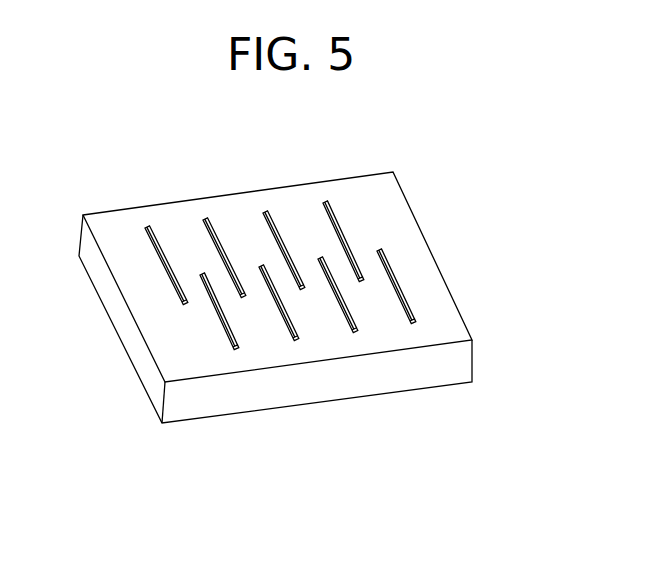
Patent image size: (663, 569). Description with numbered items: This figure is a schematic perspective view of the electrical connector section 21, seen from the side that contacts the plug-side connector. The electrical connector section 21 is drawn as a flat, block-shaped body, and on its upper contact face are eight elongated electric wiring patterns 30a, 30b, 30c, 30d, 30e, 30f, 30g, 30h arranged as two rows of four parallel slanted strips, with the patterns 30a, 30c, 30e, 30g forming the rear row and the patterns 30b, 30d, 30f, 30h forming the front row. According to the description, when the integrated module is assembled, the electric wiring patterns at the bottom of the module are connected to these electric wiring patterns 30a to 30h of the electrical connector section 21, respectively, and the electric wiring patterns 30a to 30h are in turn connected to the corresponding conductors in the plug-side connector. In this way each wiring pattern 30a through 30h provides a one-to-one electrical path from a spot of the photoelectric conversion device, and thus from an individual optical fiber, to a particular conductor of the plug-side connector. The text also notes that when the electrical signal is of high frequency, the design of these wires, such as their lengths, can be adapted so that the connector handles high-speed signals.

The electrical connector section 21 is at (176, 435).
The electric wiring pattern 30a is at (152, 232).
The electric wiring pattern 30b is at (237, 344).
The electric wiring pattern 30c is at (208, 222).
The electric wiring pattern 30d is at (297, 336).
The electric wiring pattern 30e is at (266, 215).
The electric wiring pattern 30f is at (356, 328).
The electric wiring pattern 30g is at (326, 203).
The electric wiring pattern 30h is at (414, 319).